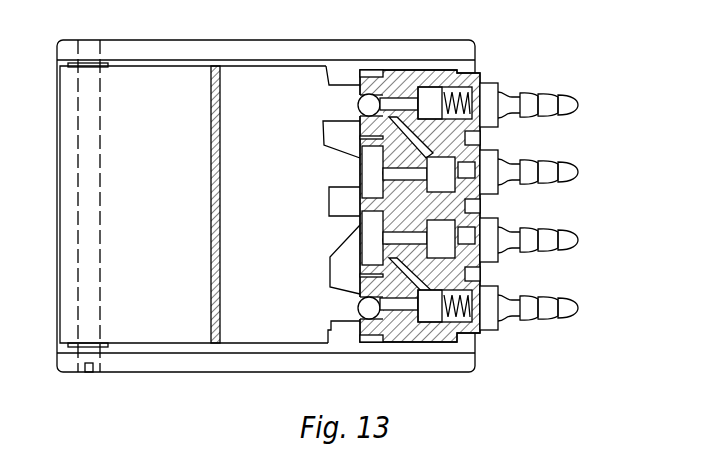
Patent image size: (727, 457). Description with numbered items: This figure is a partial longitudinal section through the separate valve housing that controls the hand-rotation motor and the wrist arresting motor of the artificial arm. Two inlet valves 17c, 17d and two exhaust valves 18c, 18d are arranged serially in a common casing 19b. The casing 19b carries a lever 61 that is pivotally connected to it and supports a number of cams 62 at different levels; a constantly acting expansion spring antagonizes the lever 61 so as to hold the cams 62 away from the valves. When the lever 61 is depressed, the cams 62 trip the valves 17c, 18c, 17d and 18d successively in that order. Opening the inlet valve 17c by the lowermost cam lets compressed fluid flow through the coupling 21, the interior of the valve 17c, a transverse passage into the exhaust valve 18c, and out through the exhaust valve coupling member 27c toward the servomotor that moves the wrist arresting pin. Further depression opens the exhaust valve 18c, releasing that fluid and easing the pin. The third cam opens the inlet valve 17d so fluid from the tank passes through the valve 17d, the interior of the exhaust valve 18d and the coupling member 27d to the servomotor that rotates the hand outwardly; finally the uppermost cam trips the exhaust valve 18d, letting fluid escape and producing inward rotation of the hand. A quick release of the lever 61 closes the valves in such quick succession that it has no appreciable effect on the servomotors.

The casing 19b is at (398, 69).
The inlet valve 17c is at (456, 71).
The coupling 21 is at (530, 101).
The exhaust valve 18c is at (427, 174).
The exhaust valve coupling member 27c is at (547, 170).
The inlet valve 17d is at (427, 241).
The coupling member 27d is at (572, 310).
The exhaust valve 18d is at (436, 322).
The lever 61 is at (211, 185).
The cams 62 is at (347, 312).